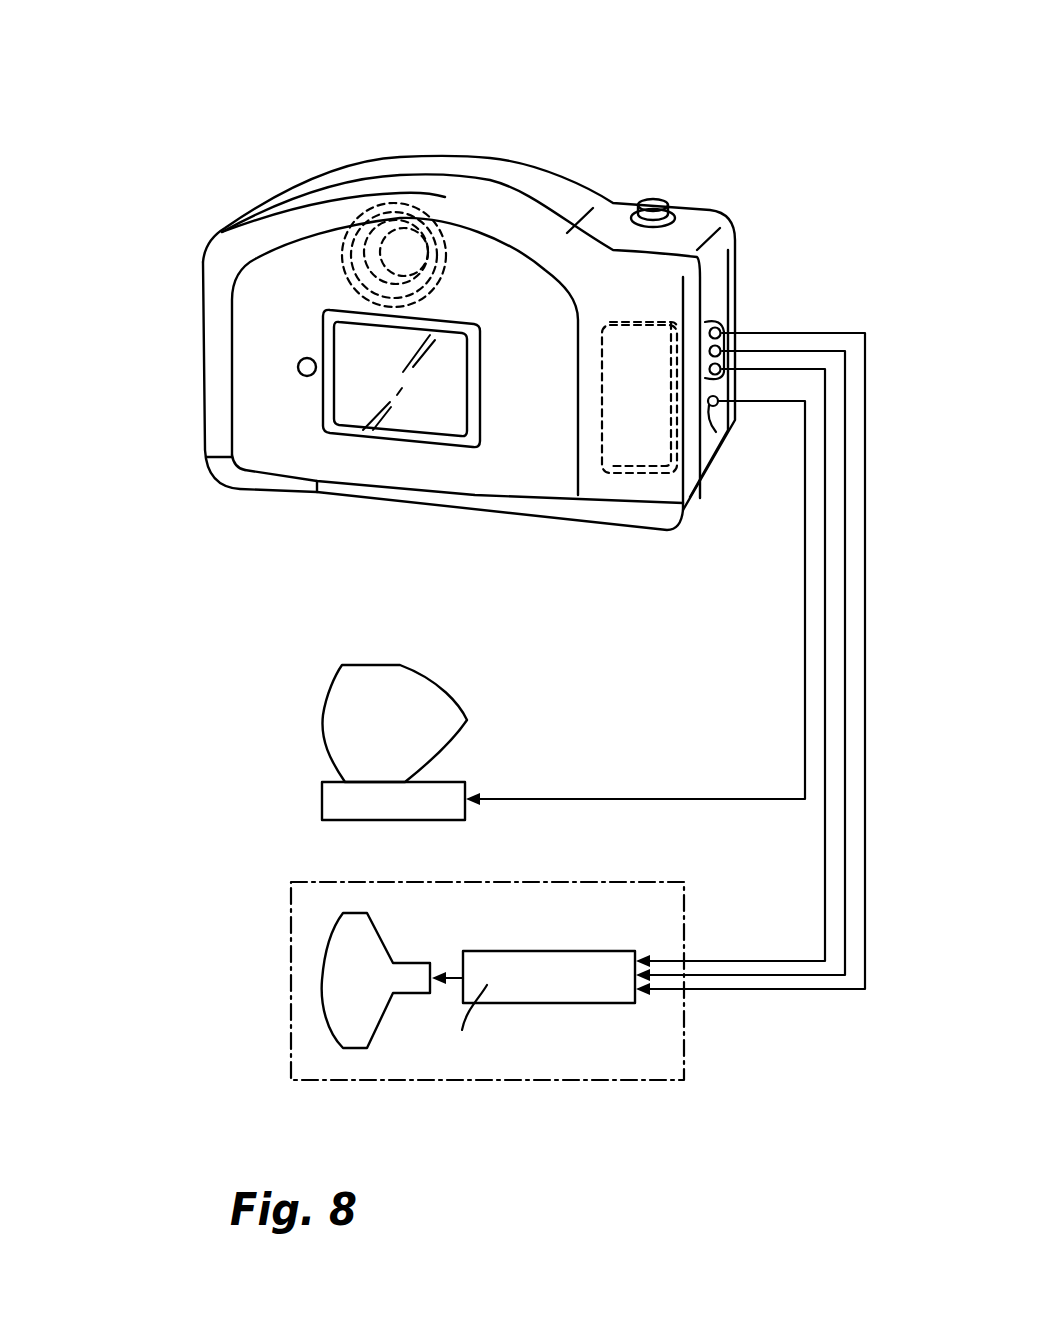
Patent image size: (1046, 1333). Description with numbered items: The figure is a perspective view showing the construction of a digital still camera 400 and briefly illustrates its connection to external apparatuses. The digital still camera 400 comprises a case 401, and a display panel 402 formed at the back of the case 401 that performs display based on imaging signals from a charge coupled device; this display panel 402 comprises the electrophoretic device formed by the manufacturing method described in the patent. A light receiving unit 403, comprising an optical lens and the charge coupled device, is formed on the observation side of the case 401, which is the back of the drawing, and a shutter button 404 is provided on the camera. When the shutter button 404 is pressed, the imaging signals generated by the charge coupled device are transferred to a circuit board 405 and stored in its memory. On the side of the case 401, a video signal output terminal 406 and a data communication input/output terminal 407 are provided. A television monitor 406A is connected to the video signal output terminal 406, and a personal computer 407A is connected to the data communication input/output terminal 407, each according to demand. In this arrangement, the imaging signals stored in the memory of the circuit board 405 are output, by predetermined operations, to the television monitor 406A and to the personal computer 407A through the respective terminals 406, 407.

The digital still camera 400 is at (549, 124).
The case 401 is at (218, 303).
The display panel 402 is at (433, 410).
The light receiving unit 403 is at (430, 210).
The shutter button 404 is at (652, 200).
The circuit board 405 is at (640, 440).
The video signal output terminal 406 is at (735, 313).
The data communication input/output terminal 407 is at (724, 428).
The personal computer 407A is at (328, 697).
The television monitor 406A is at (291, 930).